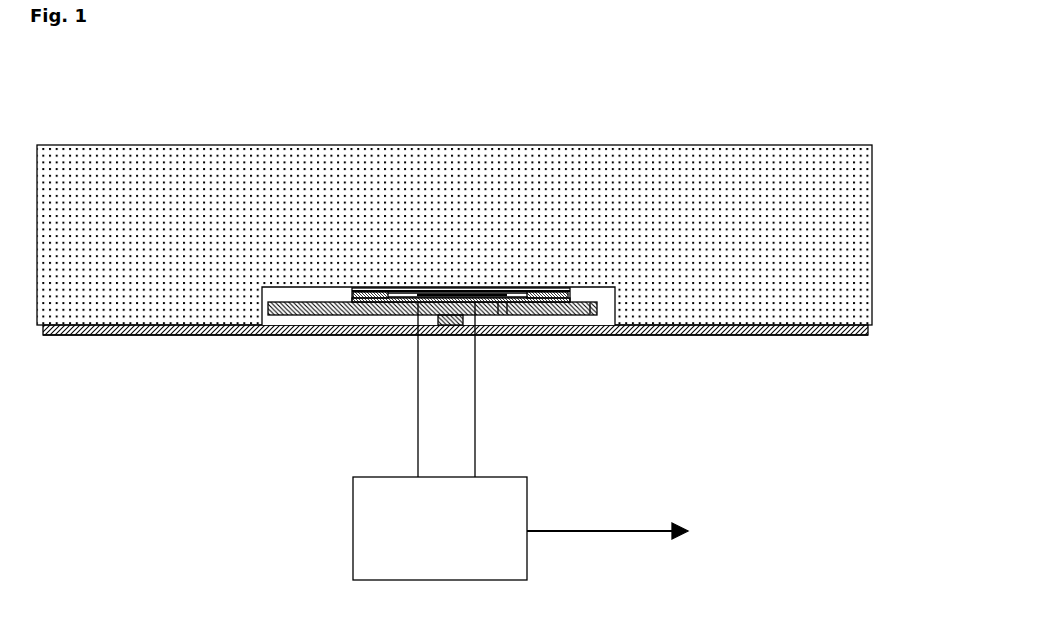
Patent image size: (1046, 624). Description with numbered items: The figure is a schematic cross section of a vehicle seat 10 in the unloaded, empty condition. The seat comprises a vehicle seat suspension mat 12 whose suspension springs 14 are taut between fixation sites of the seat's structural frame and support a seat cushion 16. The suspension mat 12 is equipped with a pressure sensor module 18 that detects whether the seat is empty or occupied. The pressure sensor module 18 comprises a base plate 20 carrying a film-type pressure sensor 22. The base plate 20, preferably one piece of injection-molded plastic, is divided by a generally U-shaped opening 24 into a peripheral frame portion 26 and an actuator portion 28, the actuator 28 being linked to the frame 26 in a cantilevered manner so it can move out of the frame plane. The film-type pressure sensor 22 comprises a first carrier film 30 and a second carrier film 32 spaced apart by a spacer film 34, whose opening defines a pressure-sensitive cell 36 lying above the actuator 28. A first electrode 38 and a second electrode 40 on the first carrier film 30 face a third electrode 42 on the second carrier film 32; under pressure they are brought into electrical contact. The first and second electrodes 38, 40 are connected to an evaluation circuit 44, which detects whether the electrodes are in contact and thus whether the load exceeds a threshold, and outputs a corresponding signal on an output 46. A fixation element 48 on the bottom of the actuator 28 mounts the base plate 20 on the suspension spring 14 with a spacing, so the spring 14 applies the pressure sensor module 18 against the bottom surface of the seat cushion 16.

The vehicle seat 10 is at (692, 123).
The vehicle seat suspension mat 12 is at (150, 343).
The suspension spring 14 is at (798, 337).
The seat cushion 16 is at (253, 173).
The pressure sensor module 18 is at (602, 295).
The base plate 20 is at (278, 316).
The film-type pressure sensor 22 is at (328, 290).
The U-shaped opening 24 is at (500, 318).
The frame portion 26 is at (592, 310).
The actuator portion 28 is at (485, 320).
The first carrier film 30 is at (370, 302).
The second carrier film 32 is at (367, 292).
The spacer film 34 is at (399, 293).
The pressure-sensitive cell 36 is at (507, 279).
The first electrode 38 is at (417, 303).
The second electrode 40 is at (510, 300).
The third electrode 42 is at (456, 291).
The evaluation circuit 44 is at (367, 512).
The output 46 is at (600, 532).
The fixation element 48 is at (445, 327).